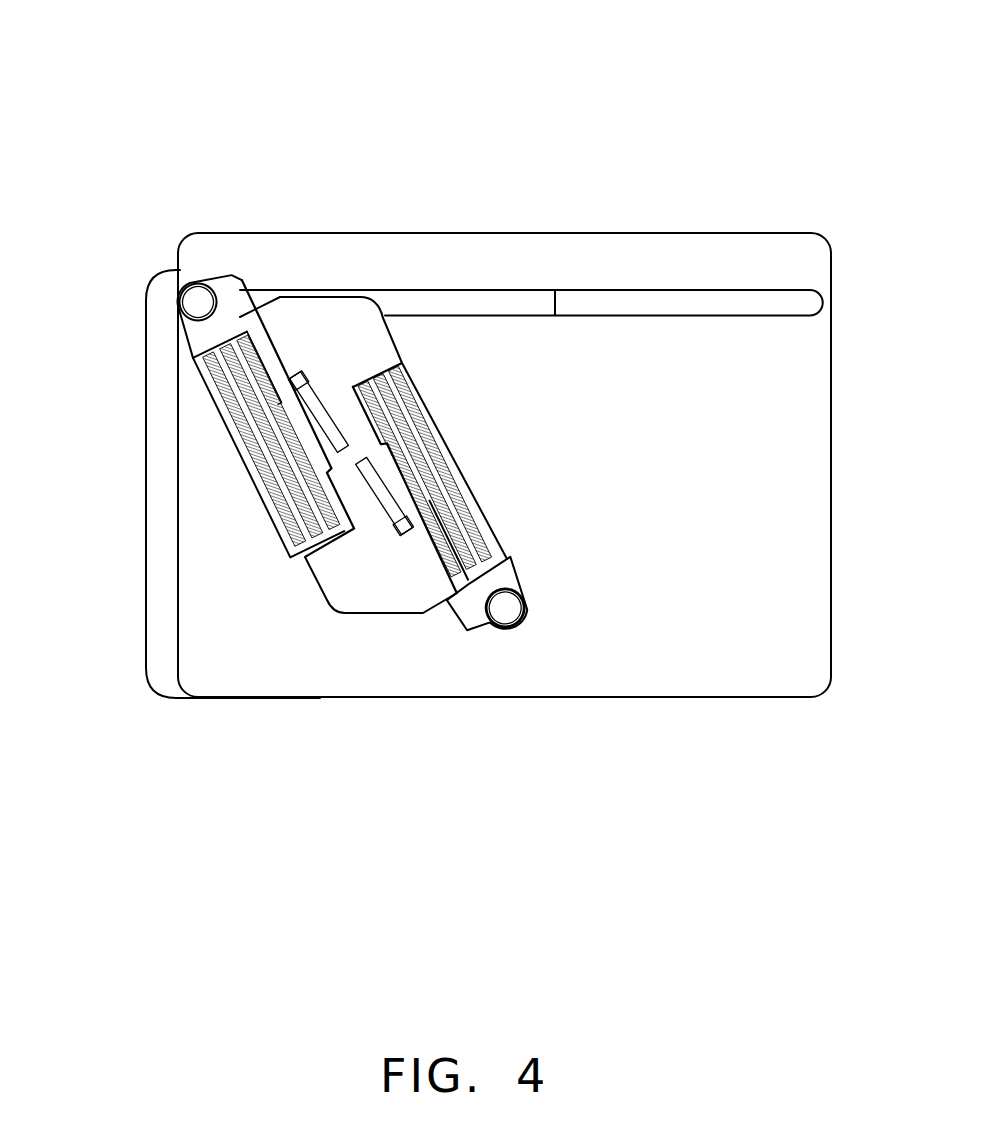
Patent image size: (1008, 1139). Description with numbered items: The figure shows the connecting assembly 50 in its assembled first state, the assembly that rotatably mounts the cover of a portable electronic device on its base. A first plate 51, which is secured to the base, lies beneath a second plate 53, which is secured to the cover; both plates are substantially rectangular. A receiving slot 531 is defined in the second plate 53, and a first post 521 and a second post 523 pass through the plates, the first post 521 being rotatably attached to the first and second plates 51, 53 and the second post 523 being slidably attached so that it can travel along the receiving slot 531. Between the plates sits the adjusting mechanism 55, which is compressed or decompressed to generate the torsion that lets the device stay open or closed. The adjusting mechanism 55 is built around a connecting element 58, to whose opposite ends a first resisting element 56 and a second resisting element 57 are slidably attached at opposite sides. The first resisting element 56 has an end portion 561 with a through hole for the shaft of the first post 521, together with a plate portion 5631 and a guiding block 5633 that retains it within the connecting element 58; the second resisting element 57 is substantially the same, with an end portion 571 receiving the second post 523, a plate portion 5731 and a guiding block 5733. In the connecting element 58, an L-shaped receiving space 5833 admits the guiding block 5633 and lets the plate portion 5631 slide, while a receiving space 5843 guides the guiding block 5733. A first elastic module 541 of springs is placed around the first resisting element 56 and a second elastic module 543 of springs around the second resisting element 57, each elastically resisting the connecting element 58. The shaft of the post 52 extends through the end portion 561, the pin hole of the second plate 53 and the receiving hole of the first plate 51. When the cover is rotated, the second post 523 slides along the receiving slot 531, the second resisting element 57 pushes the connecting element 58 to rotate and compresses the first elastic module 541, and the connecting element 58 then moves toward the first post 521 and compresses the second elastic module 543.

The connecting assembly 50 is at (467, 41).
The first plate 51 is at (147, 362).
The post 52 is at (193, 495).
The first post 521 is at (563, 682).
The second post 523 is at (197, 310).
The second plate 53 is at (795, 557).
The receiving slot 531 is at (690, 302).
The first elastic module 541 is at (432, 612).
The second elastic module 543 is at (305, 540).
The adjusting mechanism 55 is at (548, 770).
The first resisting element 56 is at (526, 563).
The end portion 561 is at (527, 603).
The plate portion 5631 is at (487, 577).
The guiding block 5633 is at (407, 513).
The second resisting element 57 is at (272, 472).
The end portion 571 is at (240, 294).
The plate portion 5731 is at (242, 286).
The guiding block 5733 is at (302, 375).
The connecting element 58 is at (401, 447).
The receiving space 5833 is at (377, 480).
The receiving space 5843 is at (323, 418).